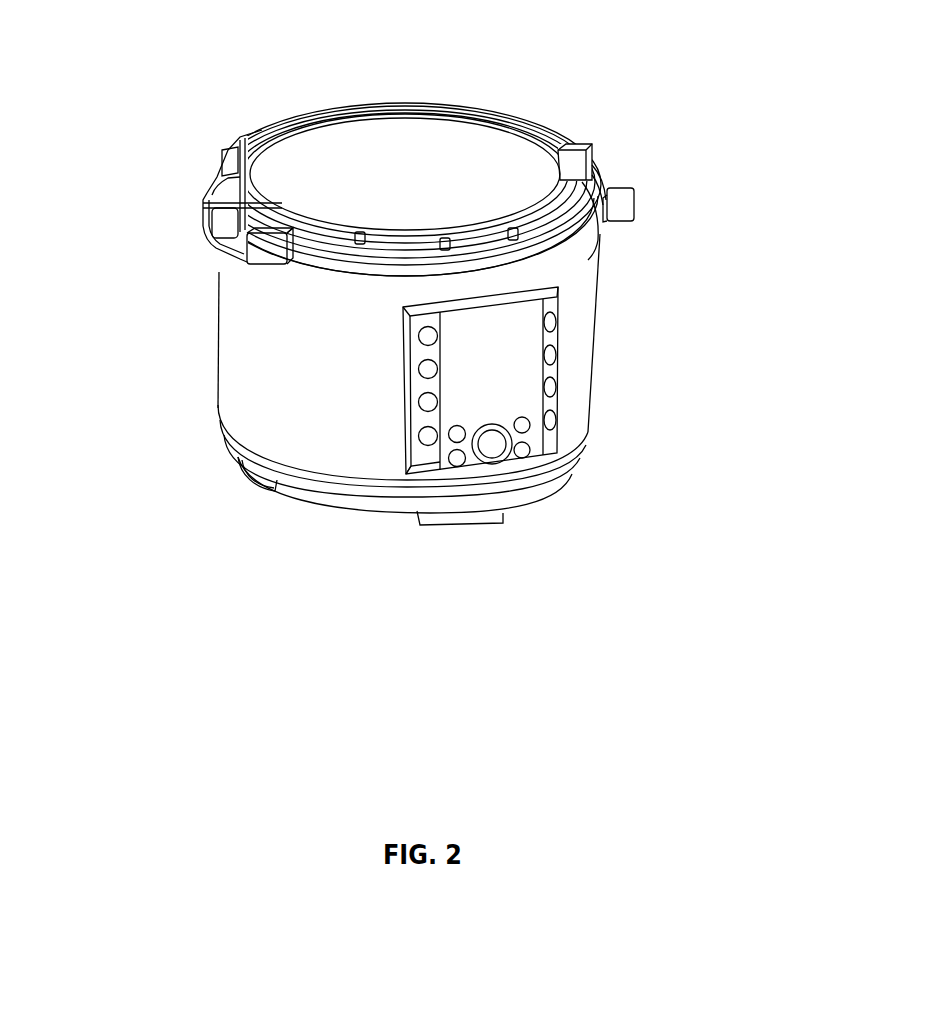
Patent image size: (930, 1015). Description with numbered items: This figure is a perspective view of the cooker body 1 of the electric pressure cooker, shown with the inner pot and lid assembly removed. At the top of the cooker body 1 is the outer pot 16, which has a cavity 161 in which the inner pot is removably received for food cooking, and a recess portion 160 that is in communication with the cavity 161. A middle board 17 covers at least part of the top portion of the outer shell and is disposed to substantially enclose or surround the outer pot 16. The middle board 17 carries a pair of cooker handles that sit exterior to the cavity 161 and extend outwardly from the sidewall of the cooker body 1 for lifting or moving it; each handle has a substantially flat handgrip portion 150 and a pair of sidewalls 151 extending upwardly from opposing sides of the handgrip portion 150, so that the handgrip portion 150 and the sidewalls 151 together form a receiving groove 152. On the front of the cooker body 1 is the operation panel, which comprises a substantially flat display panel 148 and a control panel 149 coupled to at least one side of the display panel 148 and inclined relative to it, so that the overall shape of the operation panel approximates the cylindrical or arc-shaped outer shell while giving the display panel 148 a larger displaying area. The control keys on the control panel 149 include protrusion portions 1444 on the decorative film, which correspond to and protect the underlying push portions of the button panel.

The cooker body 1 is at (267, 402).
The outer pot 16 is at (595, 232).
The middle board 17 is at (553, 143).
The display panel 148 is at (595, 425).
The control panel 149 is at (420, 455).
The handgrip portion 150 is at (230, 246).
The sidewalls 151 is at (212, 194).
The receiving groove 152 is at (233, 226).
The recess portion 160 is at (280, 205).
The cavity 161 is at (402, 143).
The protrusion portion 1444 is at (522, 452).